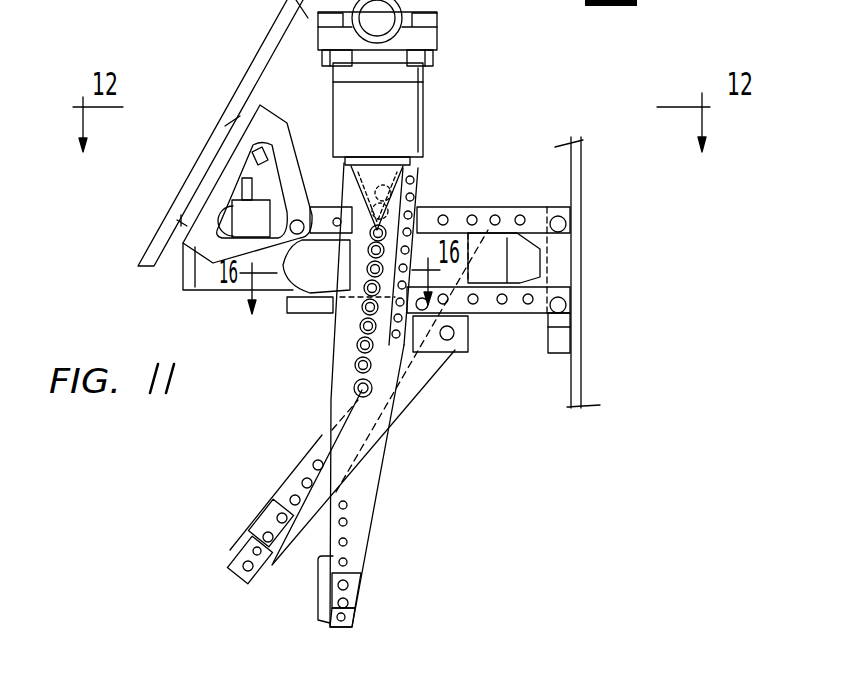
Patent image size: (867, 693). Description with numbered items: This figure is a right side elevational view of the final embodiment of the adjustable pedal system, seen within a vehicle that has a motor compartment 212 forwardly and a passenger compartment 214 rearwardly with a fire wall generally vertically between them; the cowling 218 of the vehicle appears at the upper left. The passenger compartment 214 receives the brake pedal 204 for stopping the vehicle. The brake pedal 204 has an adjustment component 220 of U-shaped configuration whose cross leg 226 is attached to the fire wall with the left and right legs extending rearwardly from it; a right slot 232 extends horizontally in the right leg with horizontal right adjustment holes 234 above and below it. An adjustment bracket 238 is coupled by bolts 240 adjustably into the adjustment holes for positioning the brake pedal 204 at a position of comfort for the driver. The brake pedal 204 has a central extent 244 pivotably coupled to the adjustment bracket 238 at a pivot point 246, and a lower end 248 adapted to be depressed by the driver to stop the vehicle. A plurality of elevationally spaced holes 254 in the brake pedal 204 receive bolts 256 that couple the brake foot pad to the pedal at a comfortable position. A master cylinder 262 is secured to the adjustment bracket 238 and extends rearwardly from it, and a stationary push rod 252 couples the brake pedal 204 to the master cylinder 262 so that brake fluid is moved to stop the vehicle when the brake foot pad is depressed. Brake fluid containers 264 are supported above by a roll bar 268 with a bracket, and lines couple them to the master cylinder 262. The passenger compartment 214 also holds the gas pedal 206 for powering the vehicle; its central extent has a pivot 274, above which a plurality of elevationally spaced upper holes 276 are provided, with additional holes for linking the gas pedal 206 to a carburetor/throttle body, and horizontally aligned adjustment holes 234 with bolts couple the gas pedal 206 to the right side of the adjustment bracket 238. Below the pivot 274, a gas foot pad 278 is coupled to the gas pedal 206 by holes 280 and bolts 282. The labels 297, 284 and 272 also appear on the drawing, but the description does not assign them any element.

The cowling 218 is at (257, 50).
The rail portion 297 is at (236, 118).
The roll bar 268 is at (440, 45).
The brake fluid containers 264 is at (402, 127).
The cam plate 284 is at (416, 176).
The upper holes 276 is at (358, 330).
The pivot 274 is at (354, 388).
The gas pedal 206 is at (370, 540).
The holes 280 is at (348, 522).
The bolts 282 is at (348, 600).
The gas foot pad 278 is at (322, 596).
The strut 272 is at (392, 430).
The brake pedal 204 is at (286, 483).
The elevationally spaced holes 254 is at (302, 483).
The stationary push rod 252 is at (265, 508).
The bolts 256 is at (237, 550).
The lower end 248 is at (233, 577).
The passenger compartment 214 is at (205, 480).
The master cylinder 262 is at (200, 290).
The adjustment component 220 is at (545, 194).
The right slot 232 is at (548, 238).
The bolts 240 is at (446, 218).
The right adjustment holes 234 is at (530, 305).
The adjustment bracket 238 is at (470, 262).
The central extent 244 is at (572, 290).
The cross leg 226 is at (572, 350).
The motor compartment 212 is at (735, 393).
The pivot point 246 is at (447, 341).